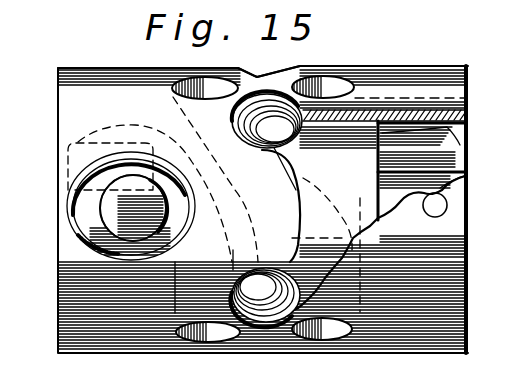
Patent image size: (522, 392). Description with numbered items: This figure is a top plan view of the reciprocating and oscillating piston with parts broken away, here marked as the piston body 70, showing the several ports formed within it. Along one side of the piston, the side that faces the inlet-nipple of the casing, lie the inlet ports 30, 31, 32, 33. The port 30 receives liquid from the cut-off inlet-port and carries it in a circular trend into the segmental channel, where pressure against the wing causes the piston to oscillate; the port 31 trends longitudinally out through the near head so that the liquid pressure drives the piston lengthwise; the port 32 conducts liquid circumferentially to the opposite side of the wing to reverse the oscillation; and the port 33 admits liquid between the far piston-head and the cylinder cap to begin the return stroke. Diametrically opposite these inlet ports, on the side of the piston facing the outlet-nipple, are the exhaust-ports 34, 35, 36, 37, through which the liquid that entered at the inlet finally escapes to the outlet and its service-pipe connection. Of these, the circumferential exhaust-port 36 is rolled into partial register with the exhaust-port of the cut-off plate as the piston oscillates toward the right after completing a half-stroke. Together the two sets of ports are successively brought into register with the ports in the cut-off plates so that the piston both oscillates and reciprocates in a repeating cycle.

The valve body 70 is at (59, 125).
The port 30 is at (203, 344).
The port 31 is at (265, 297).
The port 32 is at (333, 333).
The port 33 is at (277, 350).
The exhaust-port 34 is at (200, 77).
The exhaust-port 35 is at (259, 75).
The circumferential exhaust-port 36 is at (335, 75).
The exhaust-port 37 is at (267, 119).